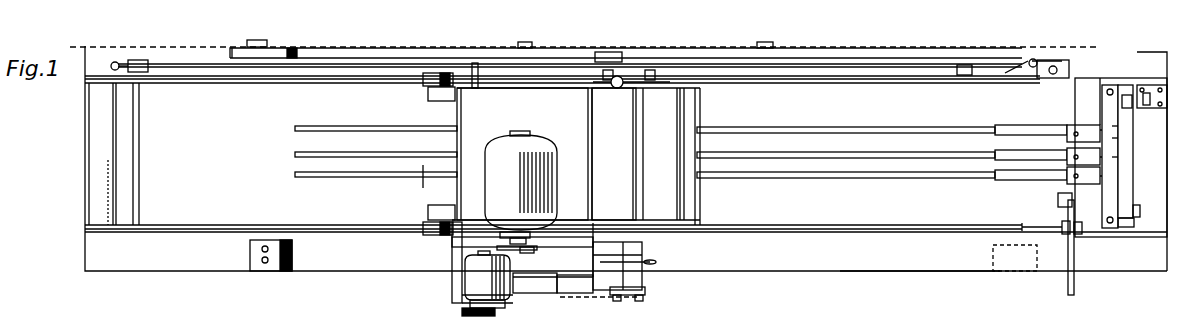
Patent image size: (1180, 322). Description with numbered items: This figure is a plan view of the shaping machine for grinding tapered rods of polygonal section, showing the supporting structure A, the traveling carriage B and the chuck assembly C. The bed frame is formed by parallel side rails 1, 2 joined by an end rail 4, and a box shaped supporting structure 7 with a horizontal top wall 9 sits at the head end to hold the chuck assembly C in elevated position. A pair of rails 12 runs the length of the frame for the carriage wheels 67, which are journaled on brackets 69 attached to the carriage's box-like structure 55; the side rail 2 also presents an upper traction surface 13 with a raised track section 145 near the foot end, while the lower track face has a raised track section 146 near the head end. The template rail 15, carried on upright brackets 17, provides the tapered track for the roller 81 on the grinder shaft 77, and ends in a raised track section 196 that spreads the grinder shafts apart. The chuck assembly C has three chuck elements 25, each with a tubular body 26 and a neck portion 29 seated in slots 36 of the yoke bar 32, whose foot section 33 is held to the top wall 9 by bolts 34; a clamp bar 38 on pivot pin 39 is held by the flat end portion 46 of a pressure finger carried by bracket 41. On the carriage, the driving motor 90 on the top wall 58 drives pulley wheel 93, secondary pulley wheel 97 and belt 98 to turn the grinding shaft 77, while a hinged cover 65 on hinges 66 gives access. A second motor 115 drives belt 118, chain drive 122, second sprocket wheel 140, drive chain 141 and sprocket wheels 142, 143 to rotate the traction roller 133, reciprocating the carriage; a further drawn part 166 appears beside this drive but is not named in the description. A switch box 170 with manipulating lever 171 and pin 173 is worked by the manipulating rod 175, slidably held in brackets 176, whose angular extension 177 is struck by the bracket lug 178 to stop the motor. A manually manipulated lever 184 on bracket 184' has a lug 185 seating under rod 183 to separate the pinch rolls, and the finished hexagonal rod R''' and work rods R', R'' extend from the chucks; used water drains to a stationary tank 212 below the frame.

The side rail 1 is at (85, 52).
The side rail 2 is at (128, 273).
The end rail 4 is at (96, 139).
The box shaped supporting structure 7 is at (1158, 242).
The horizontal top wall 9 is at (1140, 239).
The rails 12 is at (238, 84).
The upper traction surface 13 is at (880, 269).
The template rail 15 is at (405, 44).
The upright brackets 17 is at (268, 44).
The chuck elements 25 is at (1086, 122).
The tubular body 26 is at (1068, 127).
The neck portion 29 is at (1120, 157).
The yoke bar 32 is at (1120, 127).
The foot section 33 is at (1129, 226).
The screws or bolts 34 is at (1113, 85).
The slots 36 is at (1120, 138).
The clamp bar 38 is at (1128, 176).
The pivot pin 39 is at (1137, 207).
The bracket 41 is at (1148, 84).
The flat end portion 46 is at (1128, 95).
The box-like structure 55 is at (434, 182).
The top wall 58 is at (576, 154).
The hinged cover 65 is at (638, 154).
The hinges 66 is at (591, 116).
The wheels 67 is at (424, 86).
The brackets 69 is at (440, 101).
The shaft 77 is at (445, 166).
The roller 81 is at (610, 52).
The driving motor 90 is at (521, 180).
The pulley wheel 93 is at (530, 251).
The secondary pulley wheel 97 is at (498, 238).
The belt 98 is at (578, 246).
The motor 115 is at (487, 279).
The belt 118 is at (462, 312).
The chain drive 122 is at (515, 292).
The traction roller 133 is at (643, 248).
The second sprocket wheel 140 is at (578, 300).
The drive chain 141 is at (605, 302).
The sprocket wheel 142 is at (620, 302).
The sprocket wheel 143 is at (646, 297).
The raised track section 145 is at (270, 272).
The raised track section 146 is at (1003, 270).
The lever 166 is at (657, 262).
The switch box 170 is at (1072, 70).
The manipulating lever 171 is at (1062, 60).
The pin 173 is at (1033, 58).
The manipulating rod 175 is at (895, 45).
The brackets 176 is at (142, 60).
The angular extension 177 is at (112, 70).
The bracket lug 178 is at (476, 62).
The rod 183 is at (700, 207).
The manually manipulated lever 184 is at (1053, 259).
The bracket 184' is at (1063, 246).
The laterally extending lug 185 is at (1057, 202).
The raised track section 196 is at (236, 50).
The stationary tank 212 is at (141, 153).
The supporting structure A is at (211, 275).
The traveling carriage B is at (450, 289).
The chuck assembly C is at (1093, 191).
The rod R' is at (882, 190).
The rod R'' is at (882, 134).
The rod R''' is at (882, 122).